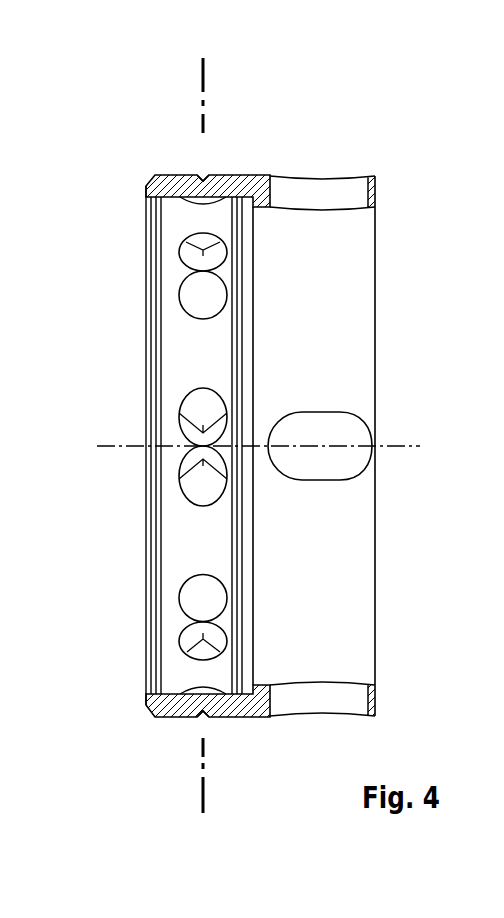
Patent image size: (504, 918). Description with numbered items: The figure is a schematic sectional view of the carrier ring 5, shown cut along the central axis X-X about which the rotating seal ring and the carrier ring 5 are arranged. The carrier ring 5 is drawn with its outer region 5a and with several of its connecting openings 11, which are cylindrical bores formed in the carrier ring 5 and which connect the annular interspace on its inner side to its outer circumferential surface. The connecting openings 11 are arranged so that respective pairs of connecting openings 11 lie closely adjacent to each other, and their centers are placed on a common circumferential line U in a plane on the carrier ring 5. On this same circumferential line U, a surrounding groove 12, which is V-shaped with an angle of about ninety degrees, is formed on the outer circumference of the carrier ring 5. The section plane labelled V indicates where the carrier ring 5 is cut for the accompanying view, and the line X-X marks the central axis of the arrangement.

The carrier ring 5 is at (308, 102).
The bearing seat surface of body 5 5a is at (322, 186).
The connecting openings 11 is at (190, 298).
The surrounding groove 12 is at (203, 718).
The circumferential line U is at (203, 176).
The section line V- V is at (210, 794).
The central axis X is at (257, 446).